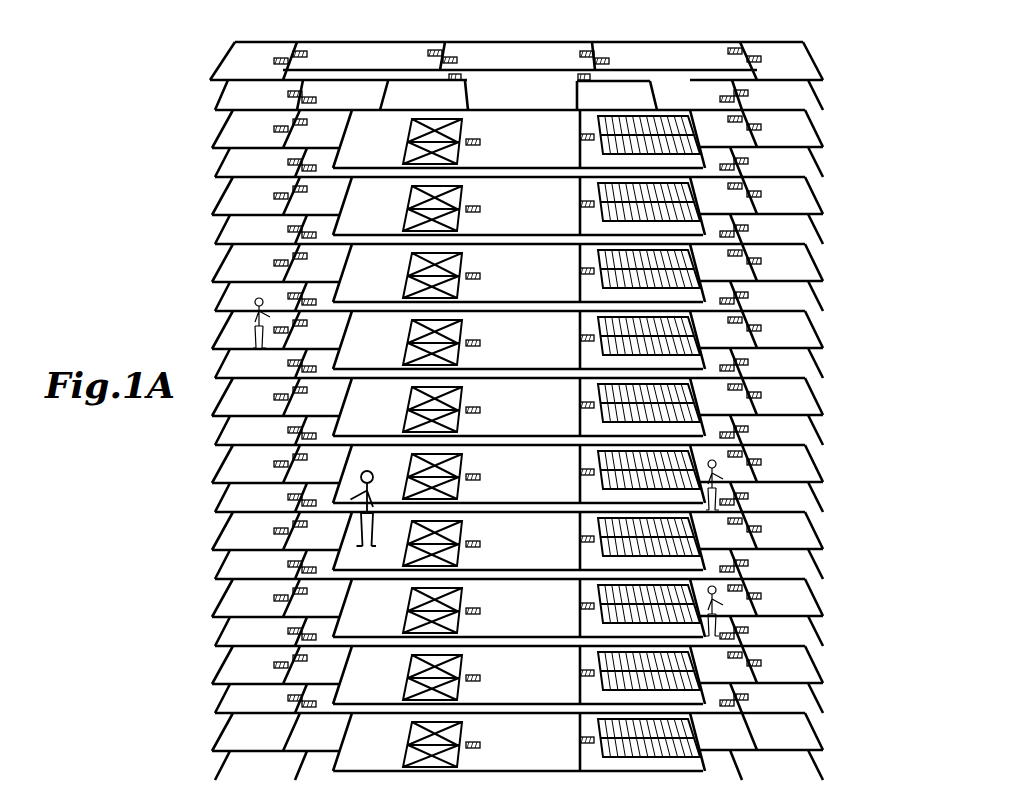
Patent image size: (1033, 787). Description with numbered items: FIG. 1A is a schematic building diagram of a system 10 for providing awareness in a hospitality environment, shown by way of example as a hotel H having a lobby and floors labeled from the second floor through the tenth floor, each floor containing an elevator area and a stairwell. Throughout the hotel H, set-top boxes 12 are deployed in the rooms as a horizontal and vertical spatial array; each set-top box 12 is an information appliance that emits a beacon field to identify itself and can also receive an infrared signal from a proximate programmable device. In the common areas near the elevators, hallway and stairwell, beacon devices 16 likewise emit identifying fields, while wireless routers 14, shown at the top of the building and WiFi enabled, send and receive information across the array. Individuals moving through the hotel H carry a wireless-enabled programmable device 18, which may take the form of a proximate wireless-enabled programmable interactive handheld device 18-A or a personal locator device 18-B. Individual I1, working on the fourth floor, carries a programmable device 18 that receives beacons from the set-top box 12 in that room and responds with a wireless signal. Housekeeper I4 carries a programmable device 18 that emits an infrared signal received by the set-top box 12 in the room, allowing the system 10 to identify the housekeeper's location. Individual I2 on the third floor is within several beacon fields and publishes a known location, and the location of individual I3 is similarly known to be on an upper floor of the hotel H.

The system for providing awareness in a hospitality environment 10 is at (118, 98).
The set-top box 12 is at (443, 60).
The wireless router 14 is at (578, 77).
The beacon device 16 is at (496, 452).
The wireless-enabled programmable device 18 is at (848, 581).
The proximate wireless-enabled programmable interactive handheld device 18-A is at (250, 316).
The personal locator device 18-B is at (356, 494).
The hotel H is at (931, 176).
The individual I1 is at (722, 500).
The individual I2 is at (722, 630).
The individual I3 is at (250, 343).
The housekeeper I4 is at (356, 514).